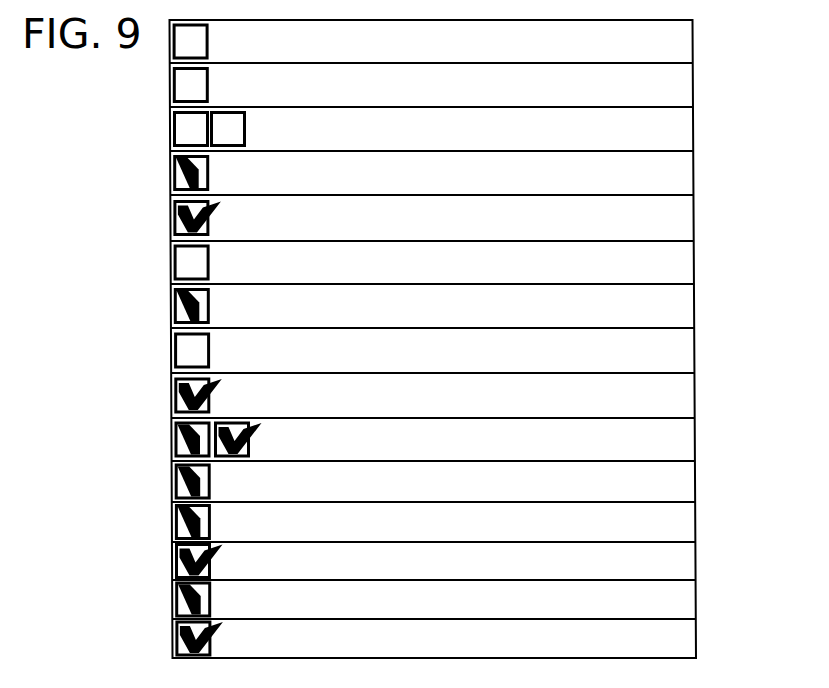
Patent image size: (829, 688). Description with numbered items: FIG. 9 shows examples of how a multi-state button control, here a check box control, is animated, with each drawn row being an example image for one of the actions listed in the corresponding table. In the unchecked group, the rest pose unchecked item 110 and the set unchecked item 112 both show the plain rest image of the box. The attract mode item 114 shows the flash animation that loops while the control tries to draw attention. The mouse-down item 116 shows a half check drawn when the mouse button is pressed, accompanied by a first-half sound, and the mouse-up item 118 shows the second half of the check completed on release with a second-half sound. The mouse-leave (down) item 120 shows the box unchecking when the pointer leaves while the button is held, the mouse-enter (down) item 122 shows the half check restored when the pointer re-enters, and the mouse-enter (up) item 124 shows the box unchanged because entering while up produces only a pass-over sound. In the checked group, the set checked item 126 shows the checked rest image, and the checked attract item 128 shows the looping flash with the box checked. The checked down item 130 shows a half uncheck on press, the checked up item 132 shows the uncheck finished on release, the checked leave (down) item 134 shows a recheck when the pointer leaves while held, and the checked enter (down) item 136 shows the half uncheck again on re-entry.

The rest pose unchecked item 110 is at (693, 46).
The set unchecked item 112 is at (693, 89).
The attract mode item 114 is at (693, 133).
The mouse-down item 116 is at (693, 177).
The mouse-up item 118 is at (694, 222).
The mouse-leave (down) item 120 is at (694, 266).
The mouse-enter (down) item 122 is at (694, 310).
The mouse-enter (up) item 124 is at (694, 354).
The set checked item 126 is at (695, 400).
The checked attract item 128 is at (695, 444).
The checked down item 130 is at (695, 486).
The checked up item 132 is at (695, 526).
The checked leave (down) item 134 is at (696, 565).
The checked enter (down) item 136 is at (696, 604).